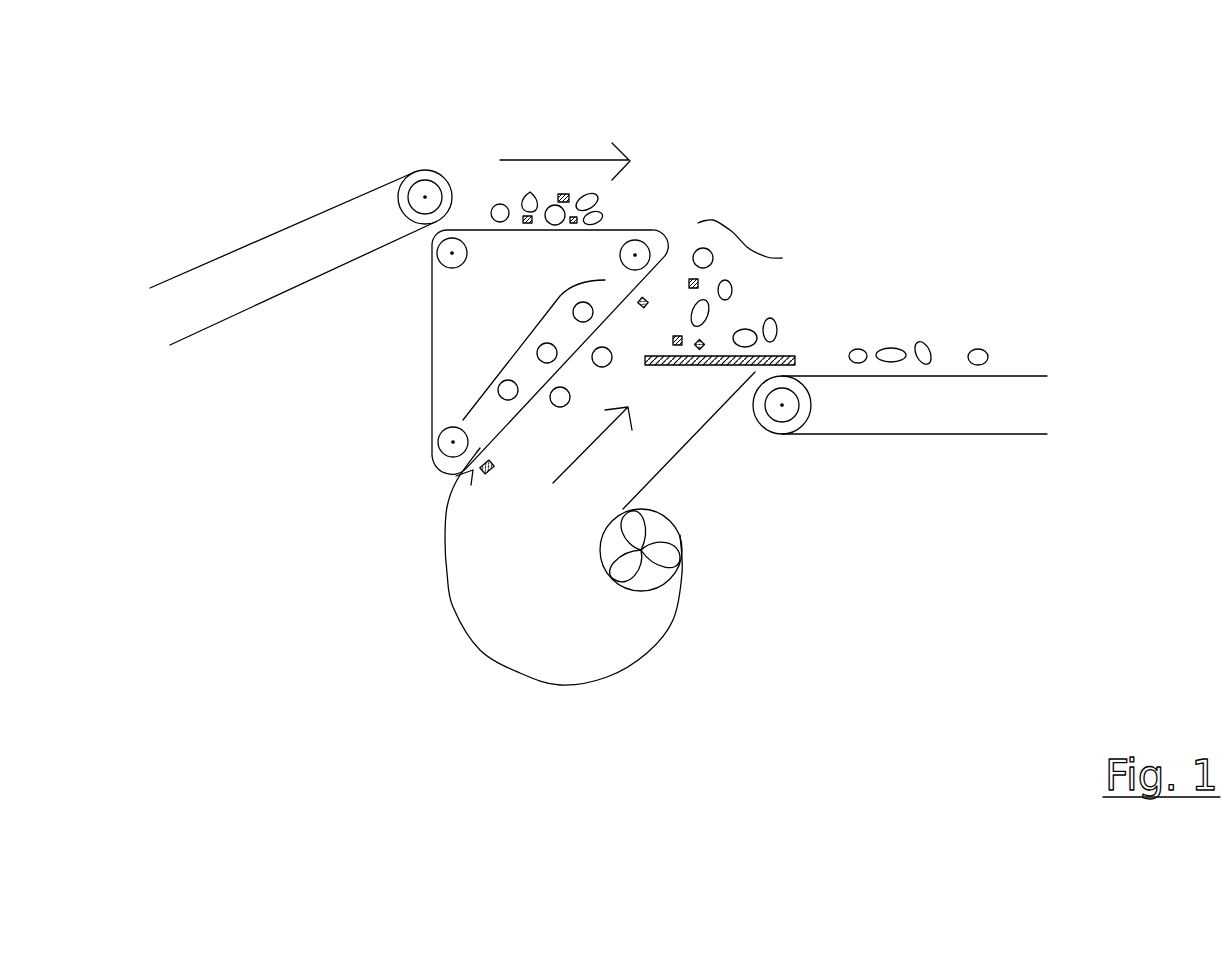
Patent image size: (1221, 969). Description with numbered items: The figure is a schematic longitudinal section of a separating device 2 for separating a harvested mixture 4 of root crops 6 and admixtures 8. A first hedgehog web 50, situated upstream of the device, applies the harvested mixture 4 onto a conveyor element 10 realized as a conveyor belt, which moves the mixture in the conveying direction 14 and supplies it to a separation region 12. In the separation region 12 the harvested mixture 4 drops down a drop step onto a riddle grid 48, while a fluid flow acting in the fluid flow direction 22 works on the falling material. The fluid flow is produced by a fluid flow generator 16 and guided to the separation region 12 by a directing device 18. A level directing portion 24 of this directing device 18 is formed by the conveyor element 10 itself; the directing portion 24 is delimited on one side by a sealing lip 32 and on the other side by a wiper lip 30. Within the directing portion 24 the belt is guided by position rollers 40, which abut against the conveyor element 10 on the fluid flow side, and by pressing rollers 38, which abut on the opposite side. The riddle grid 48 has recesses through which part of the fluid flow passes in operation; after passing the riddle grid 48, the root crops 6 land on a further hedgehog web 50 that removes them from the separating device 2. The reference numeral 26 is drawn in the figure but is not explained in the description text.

The separating device 2 is at (1118, 104).
The harvested mixture 4 is at (507, 176).
The root crops 6 is at (929, 319).
The admixtures 8 is at (700, 282).
The conveyor element 10 is at (473, 230).
The separation region 12 is at (798, 330).
The conveying direction 14 is at (548, 153).
The fluid flow generator 16 is at (652, 593).
The directing device 18 is at (680, 460).
The fluid flow direction 22 is at (574, 465).
The directing portion 24 is at (487, 383).
The deflector 26 is at (437, 467).
The wiper lip 30 is at (661, 279).
The sealing lip 32 is at (473, 473).
The pressing rollers 38 is at (573, 306).
The position rollers 40 is at (550, 401).
The riddle grid 48 is at (710, 365).
The hedgehog web 50 is at (268, 228).